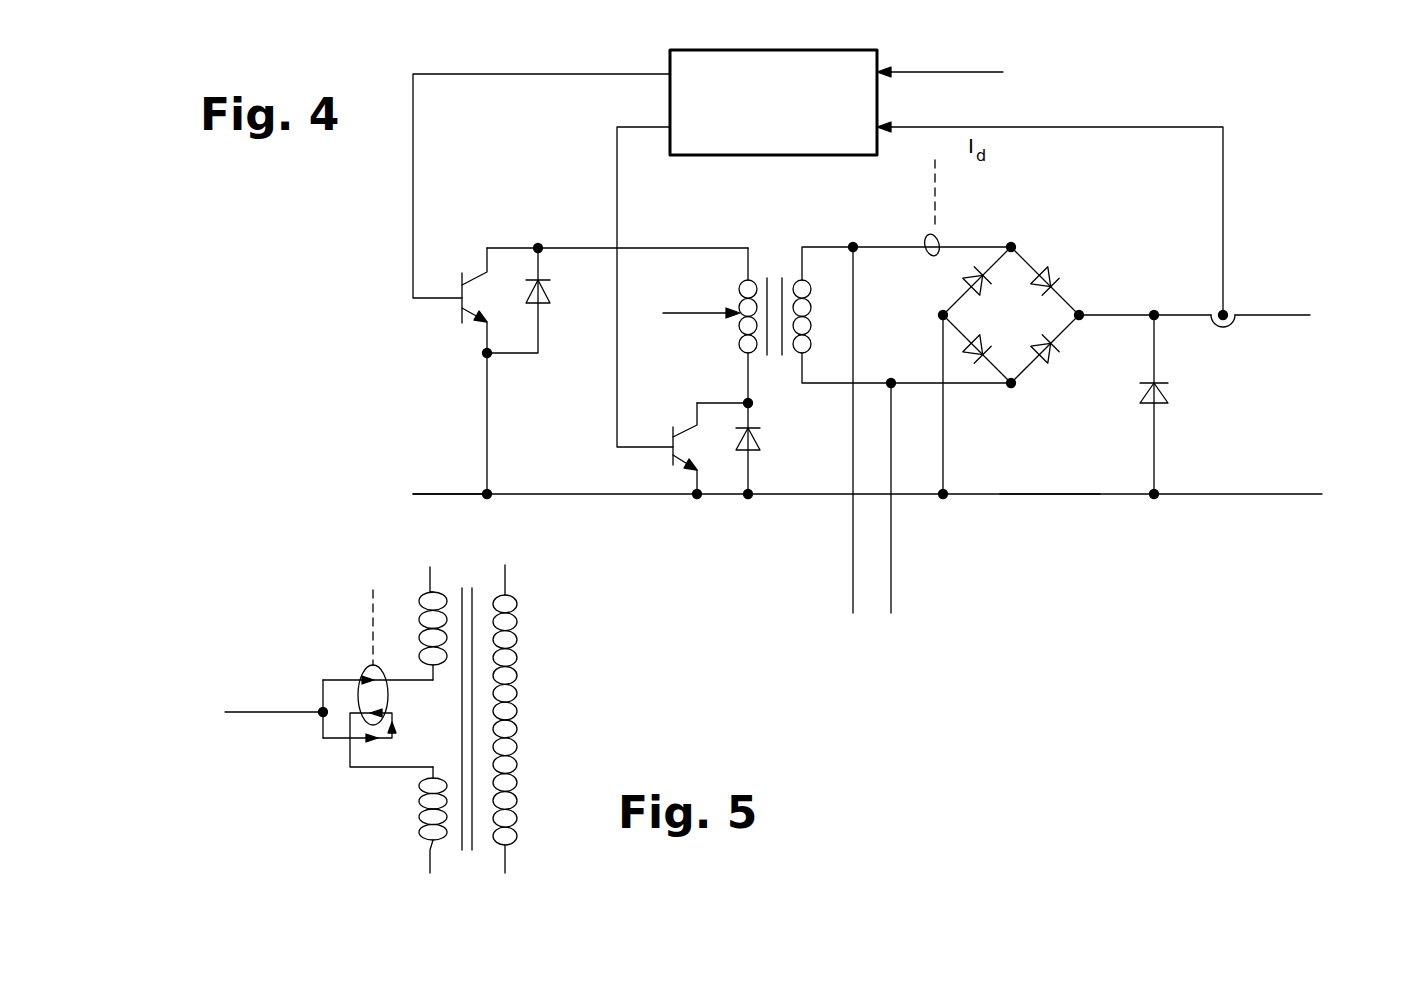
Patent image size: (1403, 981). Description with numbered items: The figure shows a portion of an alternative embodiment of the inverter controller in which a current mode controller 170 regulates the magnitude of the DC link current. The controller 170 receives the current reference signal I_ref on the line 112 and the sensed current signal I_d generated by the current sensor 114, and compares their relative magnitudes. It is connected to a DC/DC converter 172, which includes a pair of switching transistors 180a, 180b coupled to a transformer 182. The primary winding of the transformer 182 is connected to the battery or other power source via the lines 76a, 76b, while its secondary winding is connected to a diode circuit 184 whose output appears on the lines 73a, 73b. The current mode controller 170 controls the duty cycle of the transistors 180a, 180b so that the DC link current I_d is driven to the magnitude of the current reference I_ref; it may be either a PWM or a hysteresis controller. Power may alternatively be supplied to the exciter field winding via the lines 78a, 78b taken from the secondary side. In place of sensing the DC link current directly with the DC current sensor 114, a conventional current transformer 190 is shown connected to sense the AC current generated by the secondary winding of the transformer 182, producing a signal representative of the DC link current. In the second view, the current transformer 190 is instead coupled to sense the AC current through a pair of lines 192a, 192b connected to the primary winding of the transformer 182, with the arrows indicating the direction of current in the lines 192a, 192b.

In FIG. 4, the current mode controller 170 is at (792, 49).
In FIG. 4, the line 112 is at (915, 72).
In FIG. 4, the switching transistor 180a is at (462, 306).
In FIG. 4, the switching transistor 180b is at (673, 432).
In FIG. 4, the line 76a is at (682, 312).
In FIG. 5, the line 76a is at (283, 712).
In FIG. 4, the line 76b is at (450, 457).
In FIG. 4, the transformer 182 is at (779, 238).
In FIG. 5, the transformer 182 is at (468, 576).
In FIG. 4, the current transformer 190 is at (940, 232).
In FIG. 5, the current transformer 190 is at (362, 680).
In FIG. 4, the diode circuit 184 is at (1030, 238).
In FIG. 4, the current sensor 114 is at (1227, 306).
In FIG. 4, the line 73a is at (1292, 314).
In FIG. 4, the line 73b is at (1262, 497).
In FIG. 4, the DC/DC converter 172 is at (1047, 518).
In FIG. 4, the line 78a is at (850, 578).
In FIG. 4, the line 78b is at (890, 580).
In FIG. 5, the line 192a is at (410, 680).
In FIG. 5, the line 192b is at (383, 767).